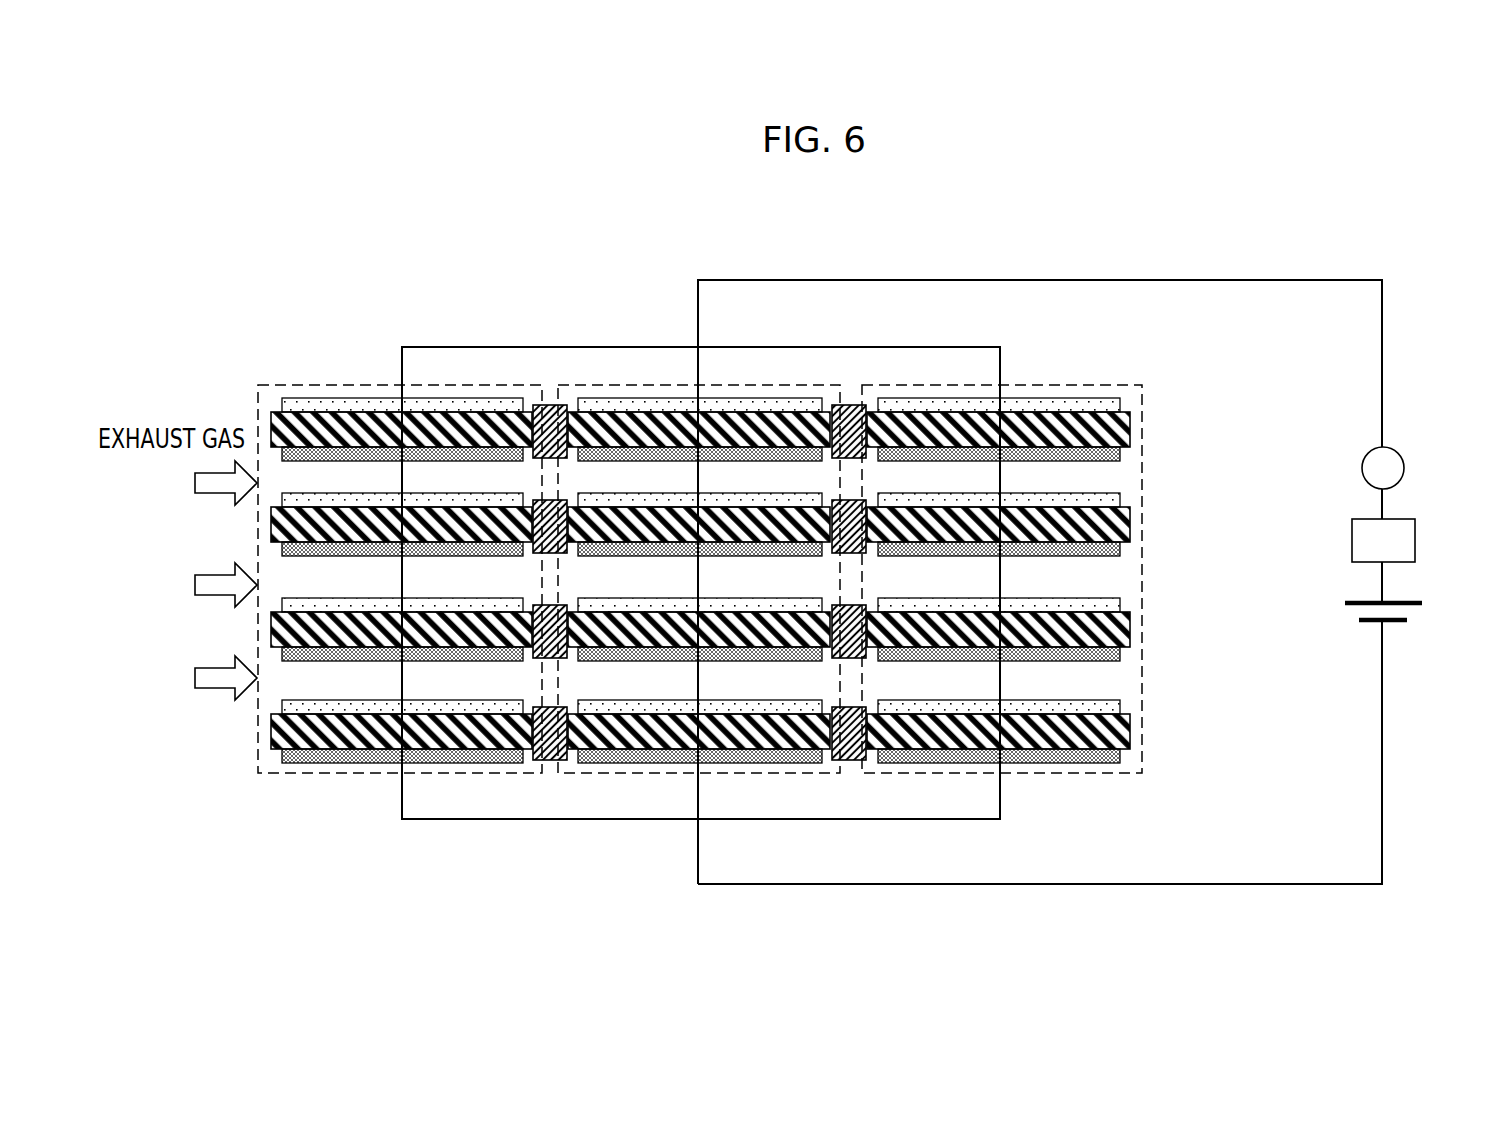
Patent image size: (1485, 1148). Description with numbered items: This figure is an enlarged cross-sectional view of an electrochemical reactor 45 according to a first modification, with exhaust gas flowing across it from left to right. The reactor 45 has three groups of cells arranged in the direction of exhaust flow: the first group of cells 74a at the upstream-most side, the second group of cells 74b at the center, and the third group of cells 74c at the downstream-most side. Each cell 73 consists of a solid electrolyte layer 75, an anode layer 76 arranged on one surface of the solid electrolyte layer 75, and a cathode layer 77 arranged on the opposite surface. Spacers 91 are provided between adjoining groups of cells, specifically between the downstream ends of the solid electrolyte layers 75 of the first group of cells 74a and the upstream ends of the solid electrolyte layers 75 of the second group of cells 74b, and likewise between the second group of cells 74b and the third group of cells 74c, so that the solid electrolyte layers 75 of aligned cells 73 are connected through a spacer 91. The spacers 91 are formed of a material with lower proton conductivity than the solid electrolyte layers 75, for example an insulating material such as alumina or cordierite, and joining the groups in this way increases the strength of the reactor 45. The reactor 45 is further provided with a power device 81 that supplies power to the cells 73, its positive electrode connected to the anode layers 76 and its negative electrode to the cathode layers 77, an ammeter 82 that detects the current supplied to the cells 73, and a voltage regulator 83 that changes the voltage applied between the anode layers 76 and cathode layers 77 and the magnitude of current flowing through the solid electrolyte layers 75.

The electrochemical reactor 45 is at (866, 534).
The cell 73 is at (700, 550).
The first group of cells 74a is at (400, 577).
The second group of cells 74b is at (733, 776).
The third group of cells 74c is at (1067, 779).
The solid electrolyte layer 75 is at (340, 425).
The anode layer 76 is at (378, 403).
The cathode layer 77 is at (296, 435).
The spacer 91 is at (548, 407).
The power device 81 is at (1397, 623).
The ammeter 82 is at (1395, 447).
The voltage regulator 83 is at (1405, 519).